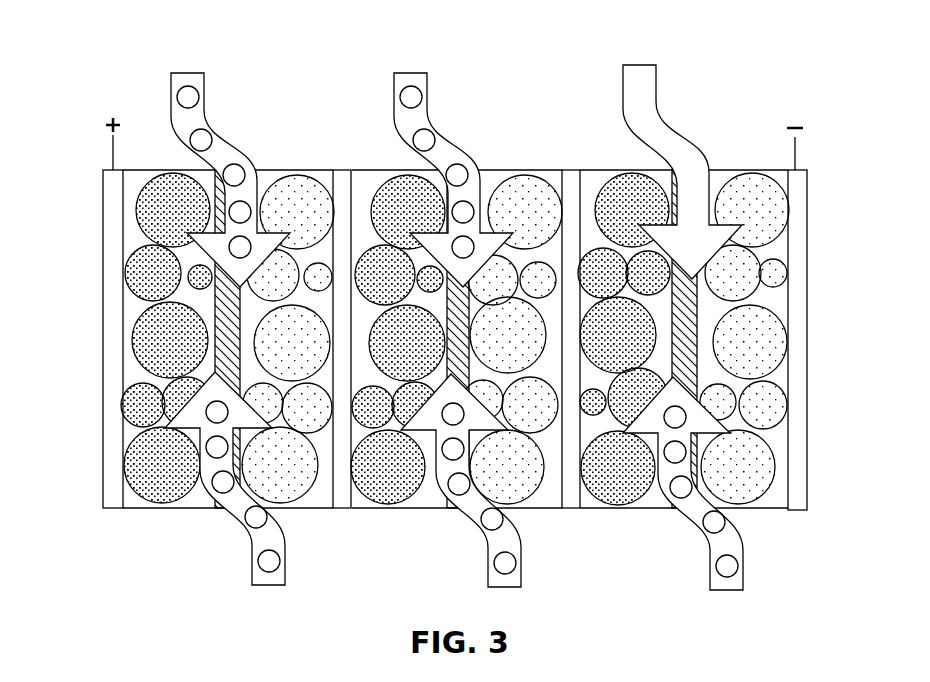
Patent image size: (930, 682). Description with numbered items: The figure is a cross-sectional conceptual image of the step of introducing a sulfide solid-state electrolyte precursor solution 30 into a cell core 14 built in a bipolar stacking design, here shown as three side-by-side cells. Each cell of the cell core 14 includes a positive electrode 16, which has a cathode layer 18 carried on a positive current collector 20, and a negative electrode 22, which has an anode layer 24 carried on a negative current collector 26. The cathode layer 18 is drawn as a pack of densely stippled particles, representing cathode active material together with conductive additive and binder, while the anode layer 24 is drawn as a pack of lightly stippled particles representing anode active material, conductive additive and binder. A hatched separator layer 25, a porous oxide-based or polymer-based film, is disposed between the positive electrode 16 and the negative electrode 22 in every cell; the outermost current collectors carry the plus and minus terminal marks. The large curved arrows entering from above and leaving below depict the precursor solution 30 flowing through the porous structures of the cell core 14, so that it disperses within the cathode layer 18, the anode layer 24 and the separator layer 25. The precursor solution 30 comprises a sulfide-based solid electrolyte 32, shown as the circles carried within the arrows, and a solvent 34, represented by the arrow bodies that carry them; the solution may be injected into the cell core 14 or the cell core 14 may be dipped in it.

The cell core 14 is at (125, 74).
The positive electrode 16 is at (133, 235).
The cathode layer 18 is at (148, 280).
The positive current collector 20 is at (115, 340).
The negative electrode 22 is at (780, 377).
The anode layer 24 is at (753, 477).
The separator layer 25 is at (690, 315).
The negative current collector 26 is at (792, 440).
The sulfide solid-state electrolyte precursor solution 30 is at (390, 93).
The sulfide-based solid electrolyte 32 is at (556, 161).
The solvent 34 is at (402, 118).